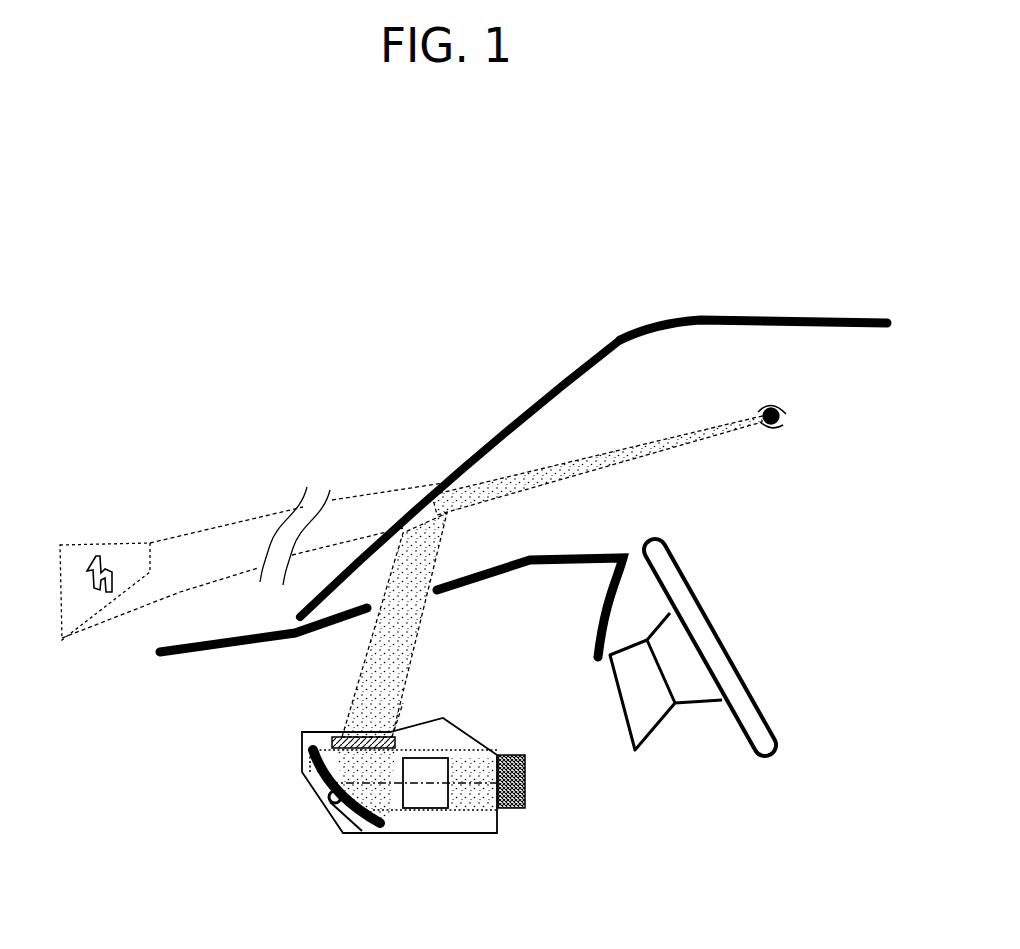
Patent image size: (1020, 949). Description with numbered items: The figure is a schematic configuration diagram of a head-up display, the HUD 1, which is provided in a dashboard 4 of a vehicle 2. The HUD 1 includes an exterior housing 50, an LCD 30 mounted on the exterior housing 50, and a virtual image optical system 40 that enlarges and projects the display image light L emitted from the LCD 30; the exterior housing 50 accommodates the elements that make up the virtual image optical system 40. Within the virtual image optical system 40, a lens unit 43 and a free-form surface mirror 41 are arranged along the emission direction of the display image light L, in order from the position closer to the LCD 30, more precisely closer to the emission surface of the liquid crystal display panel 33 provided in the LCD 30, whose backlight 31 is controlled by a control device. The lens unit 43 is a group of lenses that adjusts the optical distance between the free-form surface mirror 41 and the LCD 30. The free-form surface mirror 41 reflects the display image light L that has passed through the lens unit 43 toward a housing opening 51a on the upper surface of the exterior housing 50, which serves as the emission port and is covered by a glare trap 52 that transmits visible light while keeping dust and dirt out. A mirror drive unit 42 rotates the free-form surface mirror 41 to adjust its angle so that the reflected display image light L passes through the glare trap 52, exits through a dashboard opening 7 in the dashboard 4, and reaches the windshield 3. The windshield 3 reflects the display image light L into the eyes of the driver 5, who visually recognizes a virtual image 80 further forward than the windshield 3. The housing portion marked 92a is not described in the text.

The HUD 1 is at (485, 776).
The vehicle 2 is at (778, 314).
The windshield 3 is at (543, 397).
The dashboard 4 is at (570, 552).
The driver 5 is at (779, 432).
The dashboard opening 7 is at (435, 570).
The LCD 30 is at (612, 781).
The backlight 31 is at (511, 781).
The liquid crystal display panel 33 is at (527, 793).
The virtual image optical system 40 is at (482, 752).
The free-form surface mirror 41 is at (326, 797).
The mirror drive unit 42 is at (327, 807).
The lens unit 43 is at (422, 812).
The exterior housing 50 is at (370, 835).
The housing opening 51a is at (352, 724).
The glare trap 52 is at (405, 706).
The virtual image 80 is at (62, 641).
The housing 92a is at (320, 731).
The display image light L is at (485, 760).